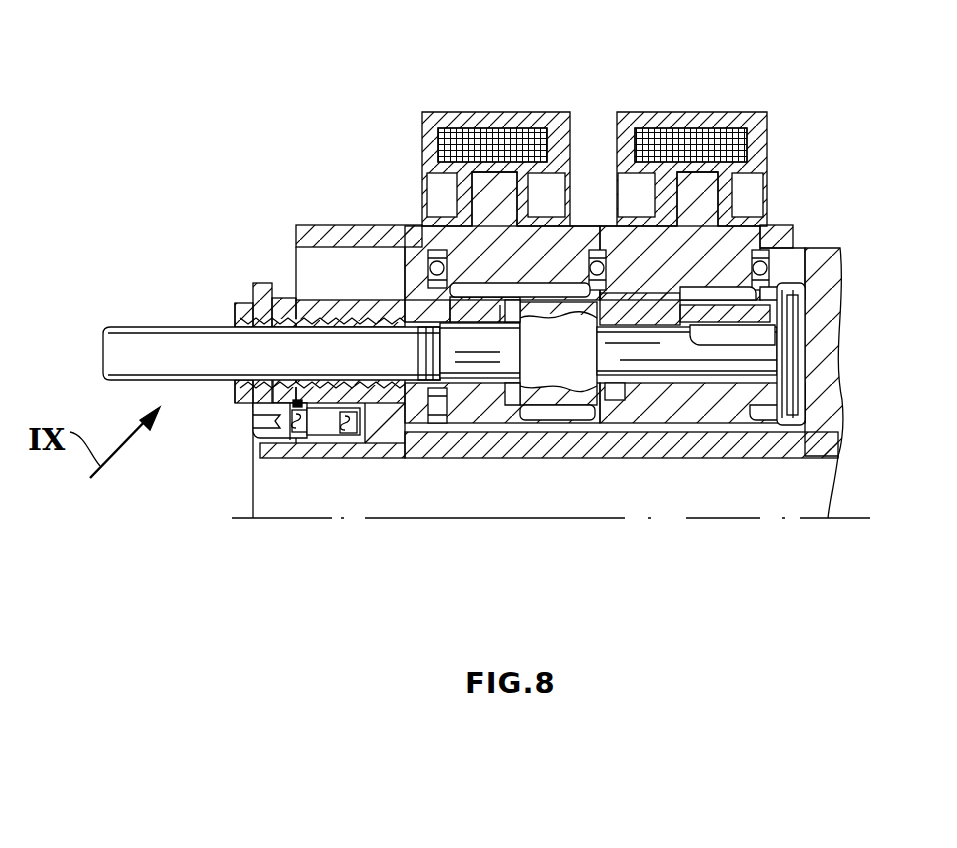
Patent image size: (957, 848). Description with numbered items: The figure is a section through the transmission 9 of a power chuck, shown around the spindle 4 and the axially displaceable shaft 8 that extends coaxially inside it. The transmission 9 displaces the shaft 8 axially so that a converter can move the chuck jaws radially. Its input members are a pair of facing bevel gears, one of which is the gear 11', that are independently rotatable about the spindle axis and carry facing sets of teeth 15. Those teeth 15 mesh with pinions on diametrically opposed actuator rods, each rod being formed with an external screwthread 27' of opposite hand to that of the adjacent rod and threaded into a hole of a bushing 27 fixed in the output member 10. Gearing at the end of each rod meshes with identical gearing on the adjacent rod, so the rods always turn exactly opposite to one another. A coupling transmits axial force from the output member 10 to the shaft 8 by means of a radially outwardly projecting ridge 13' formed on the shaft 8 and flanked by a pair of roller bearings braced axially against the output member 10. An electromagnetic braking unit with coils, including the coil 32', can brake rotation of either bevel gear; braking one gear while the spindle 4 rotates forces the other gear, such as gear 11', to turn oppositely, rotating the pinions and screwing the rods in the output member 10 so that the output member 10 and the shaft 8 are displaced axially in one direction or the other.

The transmission 9 is at (598, 100).
The electromagnetic brake coil 32' is at (692, 137).
The output member 10 is at (283, 300).
The teeth 15 is at (566, 285).
The bevel gear 11' is at (746, 304).
The external screwthread 27' is at (210, 330).
The spindle 4 is at (830, 340).
The bushing 27 is at (292, 370).
The ridge 13' is at (333, 504).
The shaft 8 is at (672, 446).